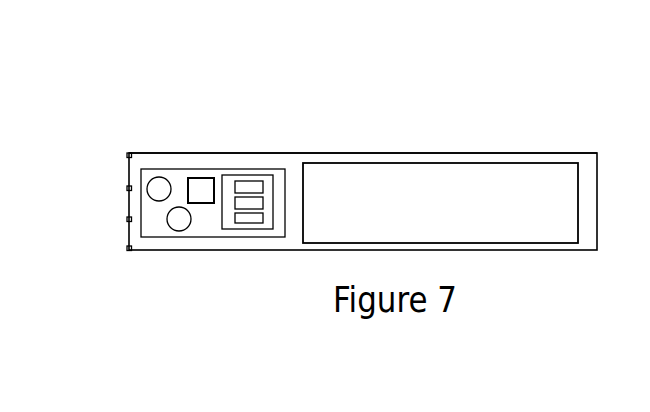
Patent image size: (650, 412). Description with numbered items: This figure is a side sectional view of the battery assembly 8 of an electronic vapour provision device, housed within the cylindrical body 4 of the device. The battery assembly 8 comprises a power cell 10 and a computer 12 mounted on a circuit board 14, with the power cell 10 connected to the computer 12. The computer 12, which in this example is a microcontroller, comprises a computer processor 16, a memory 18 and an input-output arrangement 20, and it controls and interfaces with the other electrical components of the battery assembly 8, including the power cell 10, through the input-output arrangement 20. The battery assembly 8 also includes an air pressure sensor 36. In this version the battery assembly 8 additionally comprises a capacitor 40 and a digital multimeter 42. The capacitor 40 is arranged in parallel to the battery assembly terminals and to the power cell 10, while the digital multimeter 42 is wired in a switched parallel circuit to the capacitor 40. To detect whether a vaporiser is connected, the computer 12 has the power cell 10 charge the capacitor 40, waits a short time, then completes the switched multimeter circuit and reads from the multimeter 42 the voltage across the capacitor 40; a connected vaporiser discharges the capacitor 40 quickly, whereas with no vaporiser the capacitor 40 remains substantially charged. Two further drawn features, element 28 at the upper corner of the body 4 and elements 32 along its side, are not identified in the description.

The body 4 is at (493, 153).
The battery assembly 8 is at (563, 153).
The power cell 10 is at (382, 187).
The computer 12 is at (272, 180).
The circuit board 14 is at (157, 228).
The computer processor 16 is at (245, 186).
The memory 18 is at (255, 200).
The input-output arrangement 20 is at (243, 223).
The corner tab 28 is at (127, 153).
The side connector tabs 32 is at (128, 190).
The air pressure sensor 36 is at (208, 185).
The capacitor 40 is at (167, 183).
The digital multimeter 42 is at (182, 225).